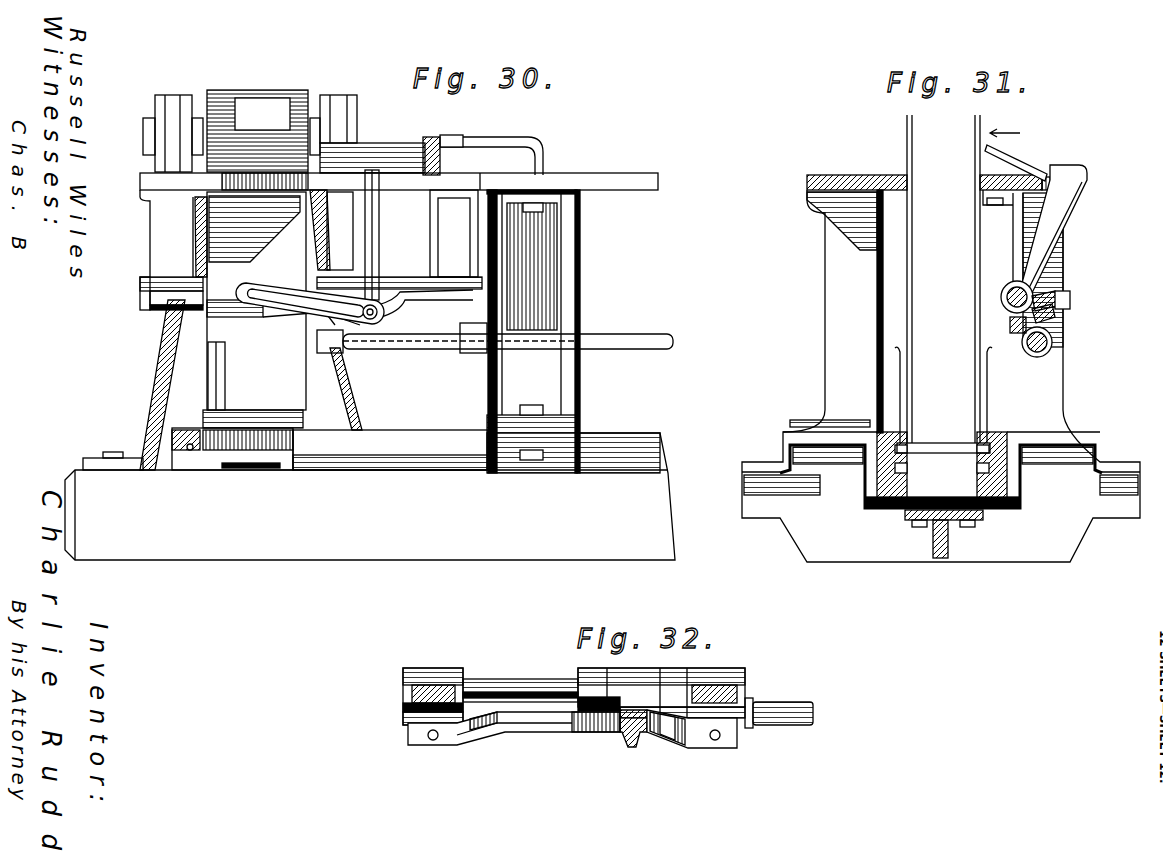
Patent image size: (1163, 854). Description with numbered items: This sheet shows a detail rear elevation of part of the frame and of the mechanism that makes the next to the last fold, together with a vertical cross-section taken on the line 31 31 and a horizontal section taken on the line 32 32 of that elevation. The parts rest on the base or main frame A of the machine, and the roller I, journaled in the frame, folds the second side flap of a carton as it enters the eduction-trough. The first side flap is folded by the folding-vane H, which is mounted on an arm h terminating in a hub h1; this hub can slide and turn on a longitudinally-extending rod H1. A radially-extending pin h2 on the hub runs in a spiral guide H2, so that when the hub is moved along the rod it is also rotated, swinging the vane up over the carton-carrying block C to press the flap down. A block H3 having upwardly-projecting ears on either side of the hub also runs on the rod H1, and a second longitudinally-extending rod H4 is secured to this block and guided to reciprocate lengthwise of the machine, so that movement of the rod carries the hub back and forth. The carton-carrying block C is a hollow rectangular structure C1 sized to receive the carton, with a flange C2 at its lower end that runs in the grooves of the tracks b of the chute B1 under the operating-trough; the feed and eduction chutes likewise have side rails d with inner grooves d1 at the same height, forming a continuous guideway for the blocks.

In FIG. 30, the roller I is at (250, 131).
In FIG. 30, the folding-vane H is at (393, 150).
In FIG. 31, the folding-vane H is at (1023, 157).
In FIG. 30, the arm h is at (385, 222).
In FIG. 31, the arm h is at (1070, 223).
In FIG. 32, the arm h is at (635, 745).
In FIG. 30, the longitudinally-extending rod H1 is at (258, 285).
In FIG. 31, the longitudinally-extending rod H1 is at (1002, 292).
In FIG. 32, the longitudinally-extending rod H1 is at (482, 690).
In FIG. 30, the spiral guide H2 is at (273, 317).
In FIG. 31, the spiral guide H2 is at (1065, 282).
In FIG. 32, the spiral guide H2 is at (550, 732).
In FIG. 30, the block H3 is at (410, 322).
In FIG. 31, the block H3 is at (1015, 340).
In FIG. 32, the block H3 is at (670, 712).
In FIG. 30, the longitudinally-extending rod H4 is at (640, 350).
In FIG. 31, the longitudinally-extending rod H4 is at (1052, 348).
In FIG. 30, the hub h1 is at (385, 292).
In FIG. 31, the hub h1 is at (1003, 308).
In FIG. 32, the hub h1 is at (607, 733).
In FIG. 30, the radially-extending pin h2 is at (370, 320).
In FIG. 31, the radially-extending pin h2 is at (1055, 314).
In FIG. 30, the carton-carrying block C is at (256, 301).
In FIG. 31, the hollow rectangular structure C1 is at (943, 396).
In FIG. 31, the flange C2 is at (953, 447).
In FIG. 31, the chute under the operating-trough B1 is at (942, 495).
In FIG. 31, the track b is at (877, 480).
In FIG. 30, the side rail d is at (173, 437).
In FIG. 30, the inner groove d1 is at (193, 447).
In FIG. 30, the base or main frame A is at (370, 496).
In FIG. 30, the section line 31 31 is at (343, 575).
In FIG. 30, the section line 32 32 is at (487, 253).